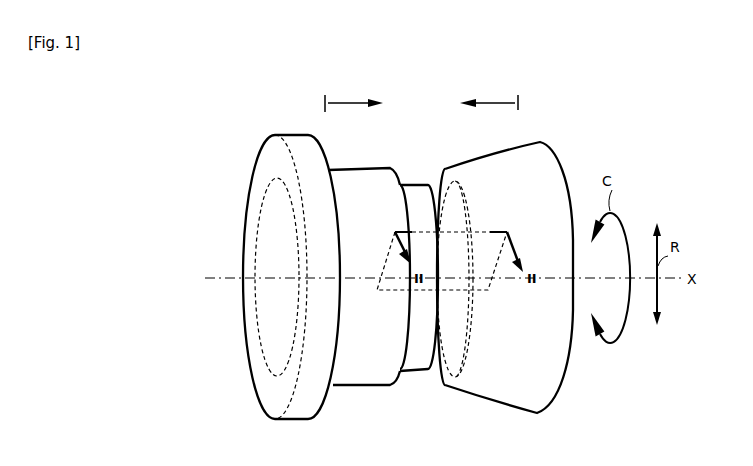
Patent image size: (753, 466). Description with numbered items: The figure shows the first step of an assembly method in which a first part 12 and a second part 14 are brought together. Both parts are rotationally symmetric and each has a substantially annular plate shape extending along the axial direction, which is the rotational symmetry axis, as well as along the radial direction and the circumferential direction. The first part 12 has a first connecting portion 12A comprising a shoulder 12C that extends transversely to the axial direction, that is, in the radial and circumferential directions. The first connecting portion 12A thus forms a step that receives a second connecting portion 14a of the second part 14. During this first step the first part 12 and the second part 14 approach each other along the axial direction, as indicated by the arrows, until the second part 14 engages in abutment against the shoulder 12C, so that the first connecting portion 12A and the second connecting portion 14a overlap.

The first part 12 is at (355, 169).
The shoulder 12C is at (400, 183).
The first connecting portion 12A is at (421, 183).
The second part 14 is at (493, 166).
The second connecting portion 14a is at (468, 376).